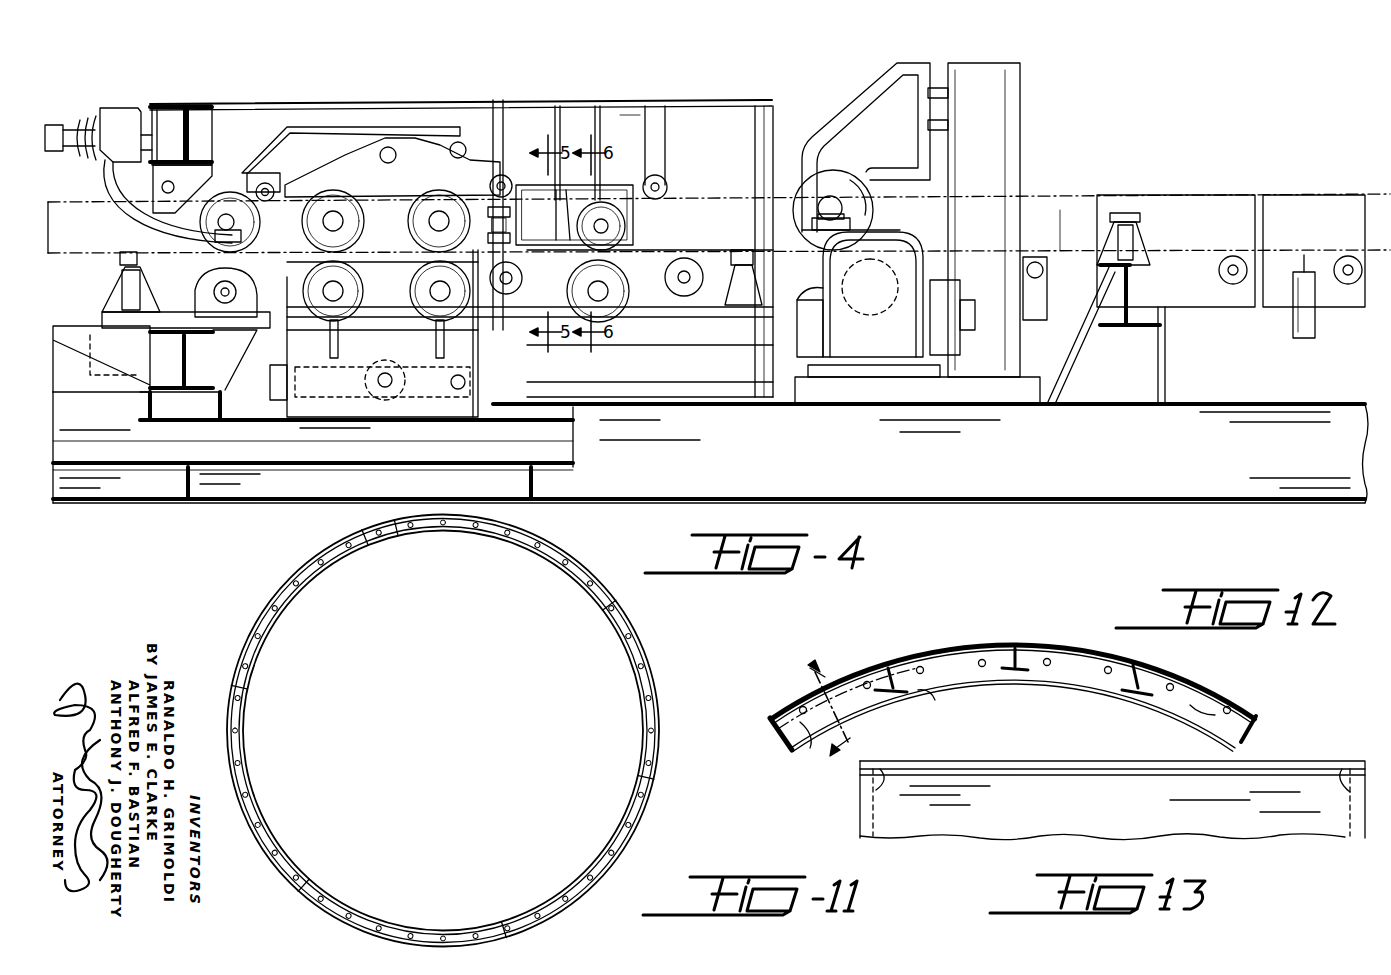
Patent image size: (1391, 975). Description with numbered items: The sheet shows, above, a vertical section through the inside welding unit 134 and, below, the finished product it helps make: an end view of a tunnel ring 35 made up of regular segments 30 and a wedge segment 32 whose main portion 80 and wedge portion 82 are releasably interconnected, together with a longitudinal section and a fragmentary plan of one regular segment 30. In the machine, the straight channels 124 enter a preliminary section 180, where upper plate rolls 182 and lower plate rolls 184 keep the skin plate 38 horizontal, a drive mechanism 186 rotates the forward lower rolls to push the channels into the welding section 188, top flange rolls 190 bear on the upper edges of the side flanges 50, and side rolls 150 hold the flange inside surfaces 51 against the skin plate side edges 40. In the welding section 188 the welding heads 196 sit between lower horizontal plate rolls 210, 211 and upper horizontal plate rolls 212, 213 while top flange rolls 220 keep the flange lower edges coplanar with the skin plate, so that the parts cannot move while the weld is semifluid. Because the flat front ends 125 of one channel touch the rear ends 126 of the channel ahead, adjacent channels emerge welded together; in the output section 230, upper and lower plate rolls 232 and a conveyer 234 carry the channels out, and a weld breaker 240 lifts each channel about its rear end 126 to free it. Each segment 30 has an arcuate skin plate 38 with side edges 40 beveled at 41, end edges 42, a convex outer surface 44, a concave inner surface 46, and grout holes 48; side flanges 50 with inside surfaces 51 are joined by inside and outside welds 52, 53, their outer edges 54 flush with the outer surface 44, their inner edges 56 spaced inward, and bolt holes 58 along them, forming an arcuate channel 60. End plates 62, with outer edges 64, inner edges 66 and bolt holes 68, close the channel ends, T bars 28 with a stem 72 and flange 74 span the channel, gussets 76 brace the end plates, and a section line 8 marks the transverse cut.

In FIG. 12, the section line 8- 8 is at (862, 629).
In FIG. 12, the T bars 28 is at (910, 695).
In FIG. 11, the regular tunnel ring segment 30 is at (235, 722).
In FIG. 12, the regular tunnel ring segment 30 is at (1002, 684).
In FIG. 11, the wedge segment 32 is at (462, 530).
In FIG. 11, the ring 35 is at (422, 731).
In FIG. 4, the arcuate skin plate 38 is at (1068, 247).
In FIG. 11, the arcuate skin plate 38 is at (612, 592).
In FIG. 12, the arcuate skin plate 38 is at (1086, 642).
In FIG. 13, the arcuate skin plate 38 is at (1275, 772).
In FIG. 13, the side edges 40 is at (1076, 769).
In FIG. 13, the bevel 41 is at (1100, 777).
In FIG. 12, the end edges 42 is at (1262, 728).
In FIG. 12, the convex outer surface 44 is at (968, 645).
In FIG. 12, the concave inner surface 46 is at (1125, 660).
In FIG. 12, the grout holes 48 is at (938, 652).
In FIG. 4, the arcuate side flanges 50 is at (1040, 245).
In FIG. 11, the arcuate side flanges 50 is at (622, 626).
In FIG. 12, the arcuate side flanges 50 is at (1068, 668).
In FIG. 13, the arcuate side flanges 50 is at (1235, 790).
In FIG. 12, the inside surfaces 51 is at (866, 694).
In FIG. 12, the inside welds 52 is at (1180, 670).
In FIG. 13, the outside welds 53 is at (865, 800).
In FIG. 13, the outer edges 54 is at (1042, 761).
In FIG. 12, the inner edges 56 is at (975, 685).
In FIG. 12, the bolt holes 58 is at (1170, 715).
In FIG. 12, the arcuate channel 60 is at (770, 712).
In FIG. 12, the end plates 62 is at (787, 740).
In FIG. 13, the end plates 62 is at (860, 832).
In FIG. 12, the outer edges 64 is at (765, 717).
In FIG. 12, the inner edges 66 is at (790, 745).
In FIG. 12, the bolt holes 68 is at (808, 741).
In FIG. 12, the stem 72 is at (935, 660).
In FIG. 12, the flange 74 is at (895, 692).
In FIG. 12, the gussets 76 is at (780, 715).
In FIG. 11, the main portion 80 is at (495, 535).
In FIG. 11, the wedge portion 82 is at (405, 535).
In FIG. 4, the channels 124 is at (113, 160).
In FIG. 4, the front ends 125 is at (440, 200).
In FIG. 4, the rear ends 126 is at (455, 158).
In FIG. 4, the inside welding unit 134 is at (681, 82).
In FIG. 4, the side rolls 150 is at (125, 250).
In FIG. 4, the preliminary section 180 is at (370, 82).
In FIG. 4, the upper plate rolls 182 is at (340, 215).
In FIG. 4, the lower plate rolls 184 is at (222, 318).
In FIG. 4, the drive mechanism 186 is at (345, 380).
In FIG. 4, the welding section 188 is at (603, 89).
In FIG. 4, the top flange rolls 190 is at (258, 183).
In FIG. 4, the welding heads 196 is at (510, 195).
In FIG. 4, the lower horizontal plate roll 210 is at (625, 300).
In FIG. 4, the lower horizontal plate roll 211 is at (690, 297).
In FIG. 4, the upper horizontal plate roll 212 is at (622, 218).
In FIG. 4, the upper horizontal plate roll 213 is at (518, 224).
In FIG. 4, the top flange rolls 220 is at (500, 130).
In FIG. 4, the output section 230 is at (1026, 151).
In FIG. 4, the upper and lower plate rolls 232 is at (800, 180).
In FIG. 4, the conveyer 234 is at (1237, 307).
In FIG. 4, the weld breaker 240 is at (1293, 335).